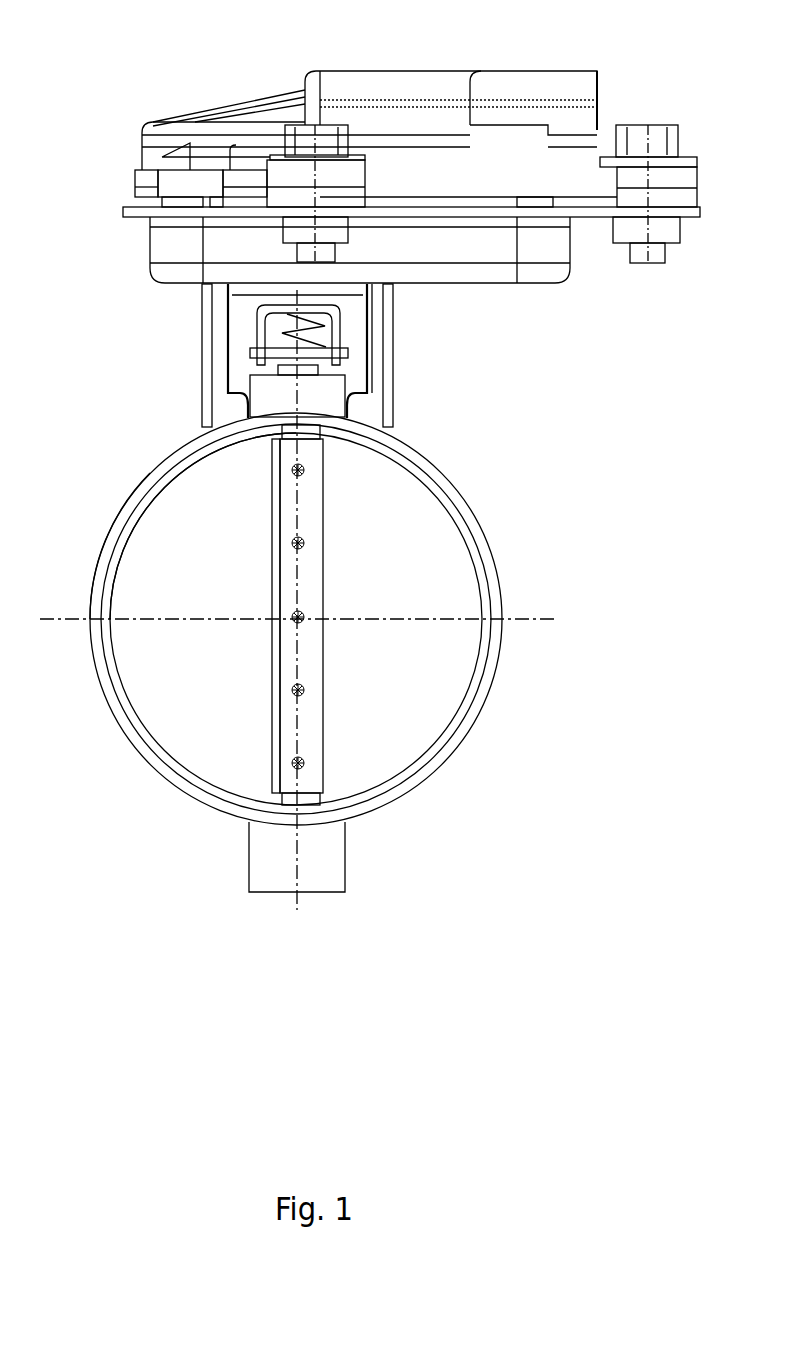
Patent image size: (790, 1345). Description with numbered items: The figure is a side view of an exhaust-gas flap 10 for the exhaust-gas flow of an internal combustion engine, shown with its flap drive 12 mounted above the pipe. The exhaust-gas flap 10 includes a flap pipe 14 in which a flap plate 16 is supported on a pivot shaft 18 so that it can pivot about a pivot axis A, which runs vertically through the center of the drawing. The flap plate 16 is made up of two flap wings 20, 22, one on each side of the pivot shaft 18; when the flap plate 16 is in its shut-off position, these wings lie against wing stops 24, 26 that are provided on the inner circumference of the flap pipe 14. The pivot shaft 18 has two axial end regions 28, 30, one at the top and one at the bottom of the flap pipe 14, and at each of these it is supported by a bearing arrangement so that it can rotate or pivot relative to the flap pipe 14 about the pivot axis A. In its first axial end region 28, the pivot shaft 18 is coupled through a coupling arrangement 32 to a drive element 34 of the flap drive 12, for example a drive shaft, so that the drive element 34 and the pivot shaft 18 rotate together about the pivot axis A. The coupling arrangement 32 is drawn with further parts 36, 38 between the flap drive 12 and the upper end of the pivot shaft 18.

The exhaust-gas flap 10 is at (550, 828).
The flap drive 12 is at (410, 52).
The flap pipe 14 is at (497, 530).
The flap plate 16 is at (203, 738).
The pivot shaft 18 is at (300, 815).
The flap wing 20 is at (143, 665).
The flap wing 22 is at (440, 688).
The wing stop 24 is at (492, 605).
The wing stop 26 is at (137, 507).
The first axial end region 28 is at (322, 400).
The axial end region 30 is at (280, 861).
The coupling arrangement 32 is at (181, 347).
The drive element 34 is at (328, 295).
The spring seat 36 is at (257, 366).
The spring 38 is at (232, 302).
The pivot axis A is at (310, 500).